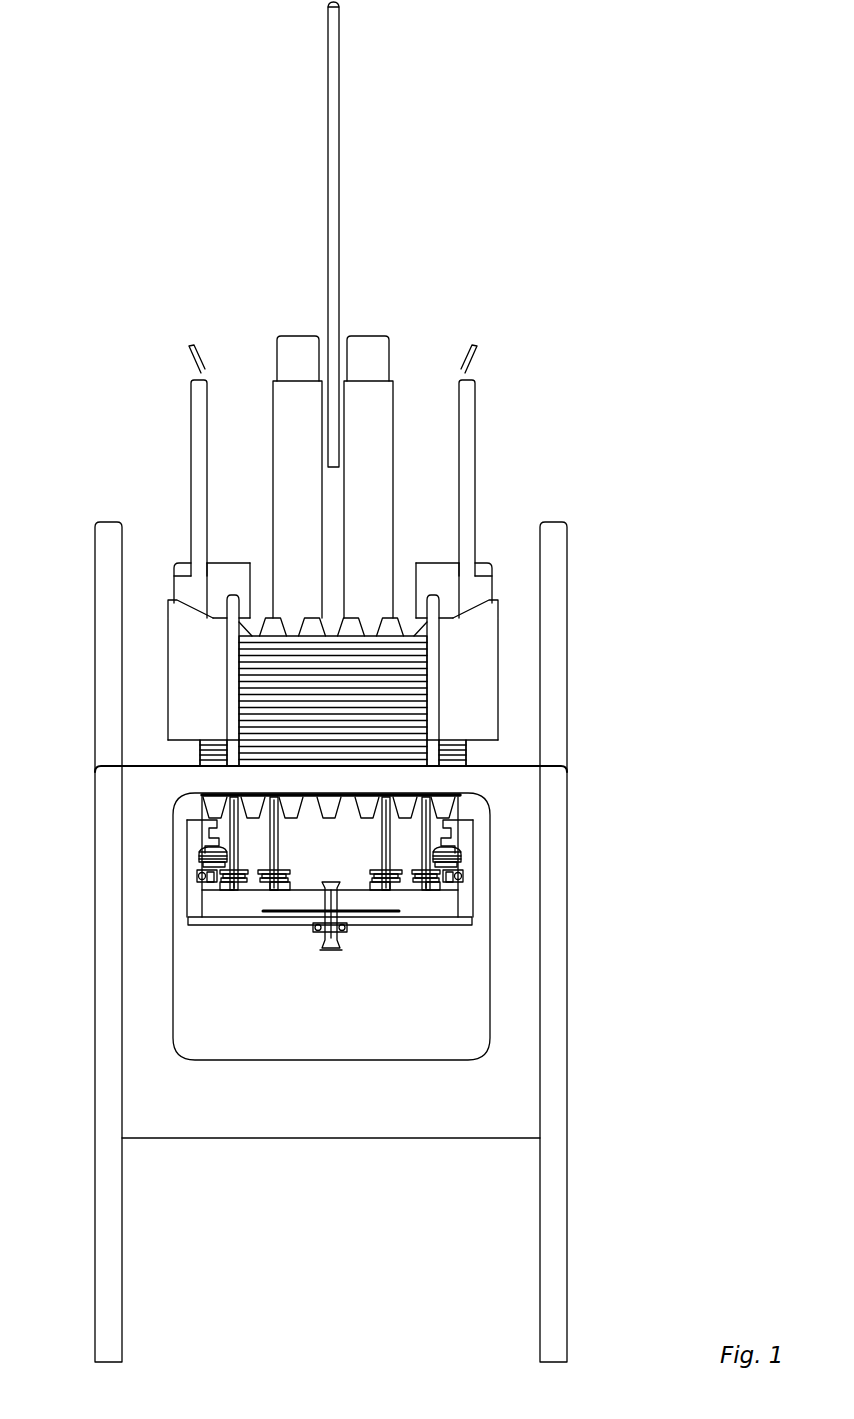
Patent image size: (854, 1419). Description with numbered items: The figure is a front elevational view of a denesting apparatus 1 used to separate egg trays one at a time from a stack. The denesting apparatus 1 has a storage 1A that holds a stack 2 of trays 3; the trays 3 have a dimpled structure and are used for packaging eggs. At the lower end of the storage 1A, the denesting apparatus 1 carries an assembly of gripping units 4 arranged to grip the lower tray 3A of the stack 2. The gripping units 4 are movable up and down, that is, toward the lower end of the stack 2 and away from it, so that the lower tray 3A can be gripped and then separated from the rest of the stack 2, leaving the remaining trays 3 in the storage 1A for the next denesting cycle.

The denesting apparatus 1 is at (380, 682).
The storage 1A is at (452, 575).
The stack 2 is at (433, 717).
The trays 3 is at (452, 753).
The lower tray 3A is at (410, 807).
The gripping units 4 is at (253, 887).